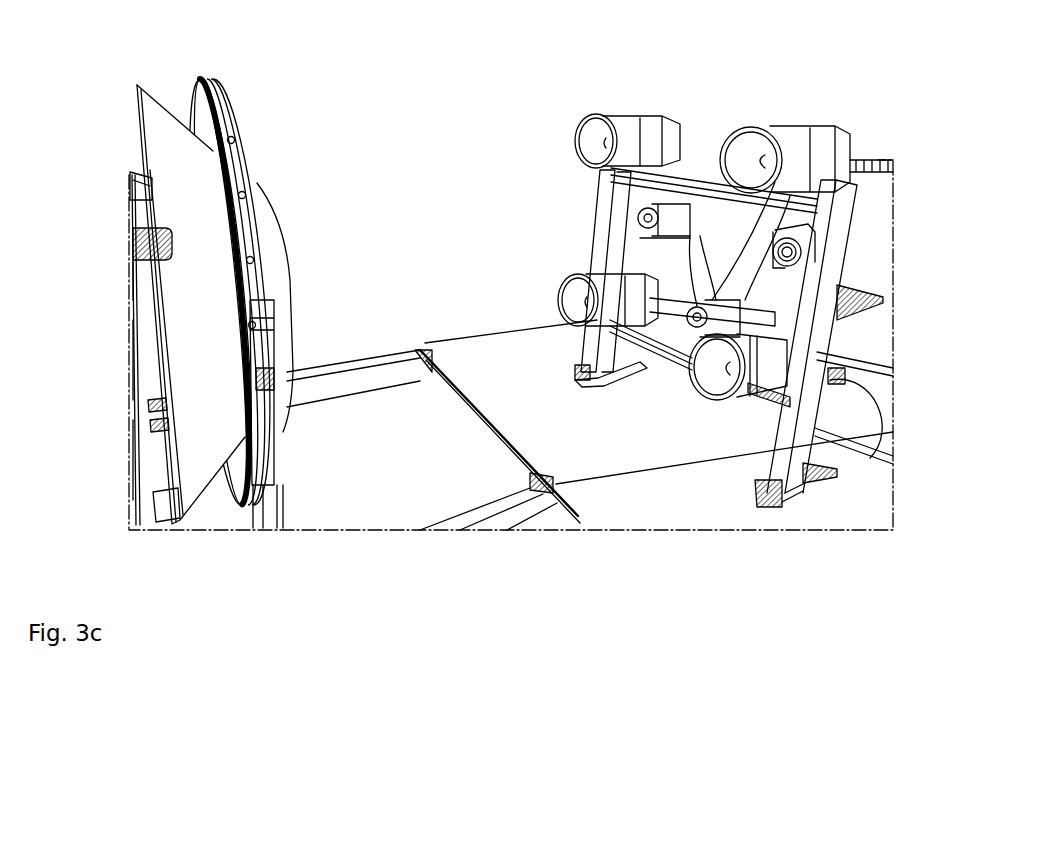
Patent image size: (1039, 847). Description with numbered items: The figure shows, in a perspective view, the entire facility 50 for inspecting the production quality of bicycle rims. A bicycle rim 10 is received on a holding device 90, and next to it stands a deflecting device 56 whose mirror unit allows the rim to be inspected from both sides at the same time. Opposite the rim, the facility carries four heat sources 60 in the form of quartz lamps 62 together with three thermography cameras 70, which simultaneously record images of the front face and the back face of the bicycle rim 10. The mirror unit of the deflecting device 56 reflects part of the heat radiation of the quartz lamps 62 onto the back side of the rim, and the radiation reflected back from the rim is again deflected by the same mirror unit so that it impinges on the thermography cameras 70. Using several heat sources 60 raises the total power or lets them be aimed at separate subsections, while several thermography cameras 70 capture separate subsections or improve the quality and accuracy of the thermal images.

The bicycle rim 10 is at (232, 100).
The facility 50 is at (868, 44).
The deflecting device 56 is at (163, 130).
The heat sources 60 is at (666, 279).
The quartz lamps 62 is at (666, 279).
The thermography cameras 70 is at (736, 307).
The holding device 90 is at (283, 517).